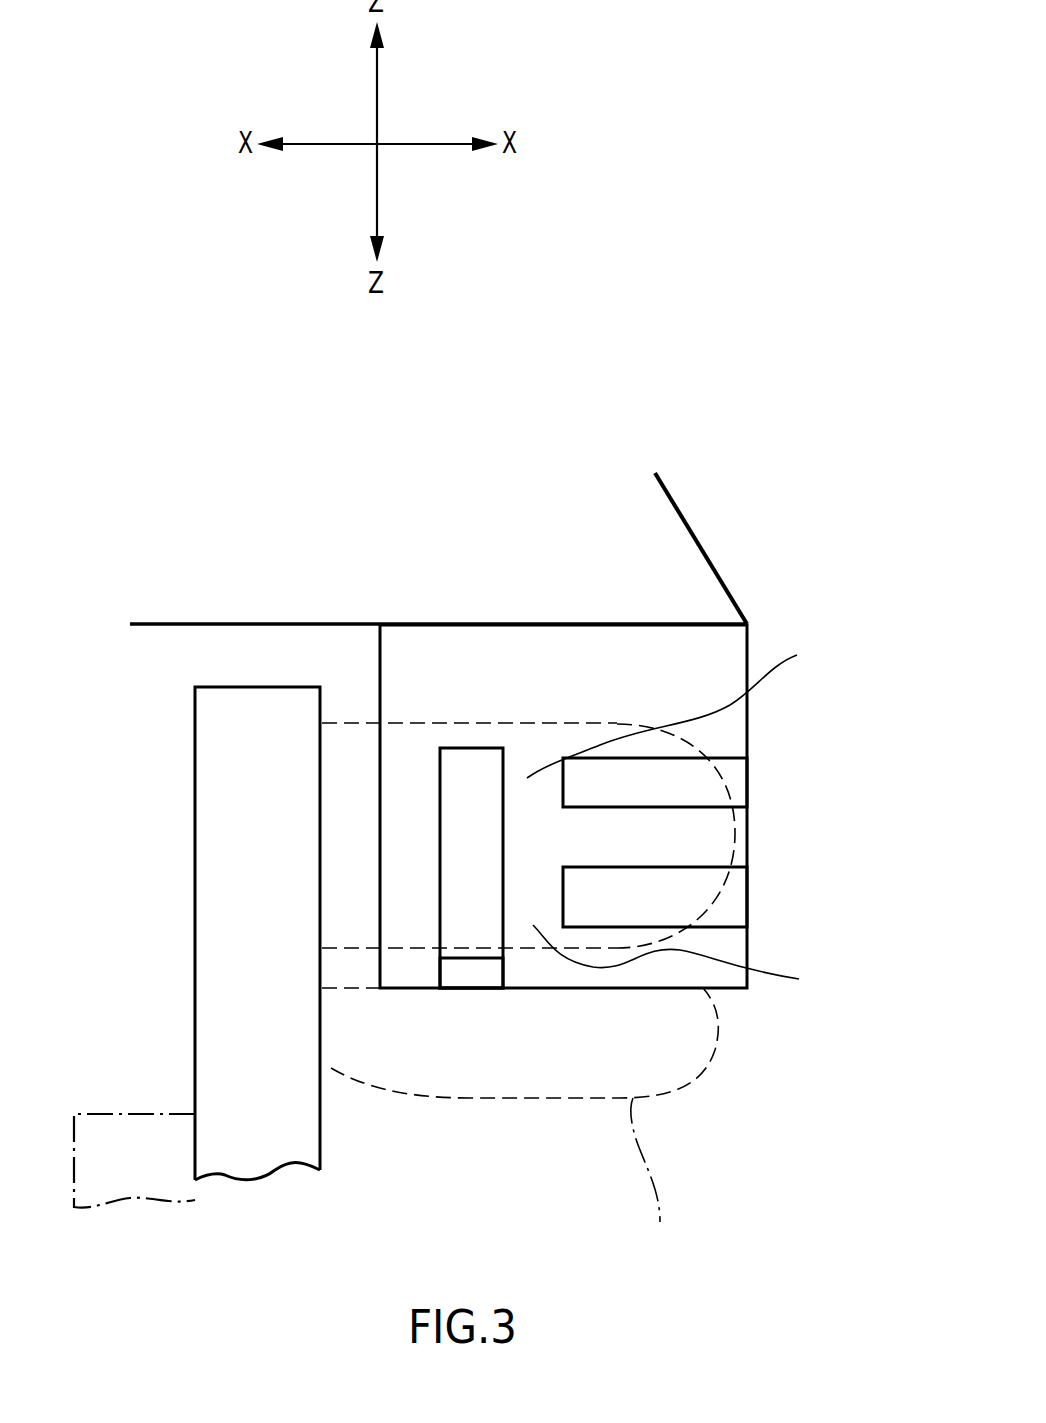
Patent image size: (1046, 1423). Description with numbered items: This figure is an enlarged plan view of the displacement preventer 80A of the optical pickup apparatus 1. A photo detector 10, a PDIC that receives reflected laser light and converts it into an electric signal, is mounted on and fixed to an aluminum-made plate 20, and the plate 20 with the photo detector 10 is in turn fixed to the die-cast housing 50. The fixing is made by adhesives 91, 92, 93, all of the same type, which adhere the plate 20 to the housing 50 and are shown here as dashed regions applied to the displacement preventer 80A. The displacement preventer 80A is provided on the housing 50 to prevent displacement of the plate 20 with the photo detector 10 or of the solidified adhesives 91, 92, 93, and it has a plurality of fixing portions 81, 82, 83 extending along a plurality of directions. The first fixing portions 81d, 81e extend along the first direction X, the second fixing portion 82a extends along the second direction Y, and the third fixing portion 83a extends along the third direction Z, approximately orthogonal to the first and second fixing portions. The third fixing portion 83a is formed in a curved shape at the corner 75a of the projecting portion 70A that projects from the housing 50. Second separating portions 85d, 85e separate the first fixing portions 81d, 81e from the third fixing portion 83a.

The optical pickup apparatus 1 is at (660, 343).
The photo detector 10 is at (111, 1114).
The plate 20 is at (218, 741).
The housing 50 is at (687, 520).
The projecting portion 70A is at (732, 988).
The corner 75a is at (660, 988).
The displacement preventer 80A is at (750, 642).
The fixing portion 81 is at (729, 825).
The first fixing portion 81d is at (738, 902).
The first fixing portion 81e is at (738, 777).
The fixing portion 82 is at (499, 1079).
The second fixing portion 82a is at (443, 970).
The fixing portion 83 is at (430, 726).
The third fixing portion 83a is at (472, 766).
The second separating portion 85d is at (692, 961).
The second separating portion 85e is at (687, 703).
The adhesive 91 is at (654, 1177).
The adhesive 92 is at (550, 723).
The adhesive 93 is at (692, 842).